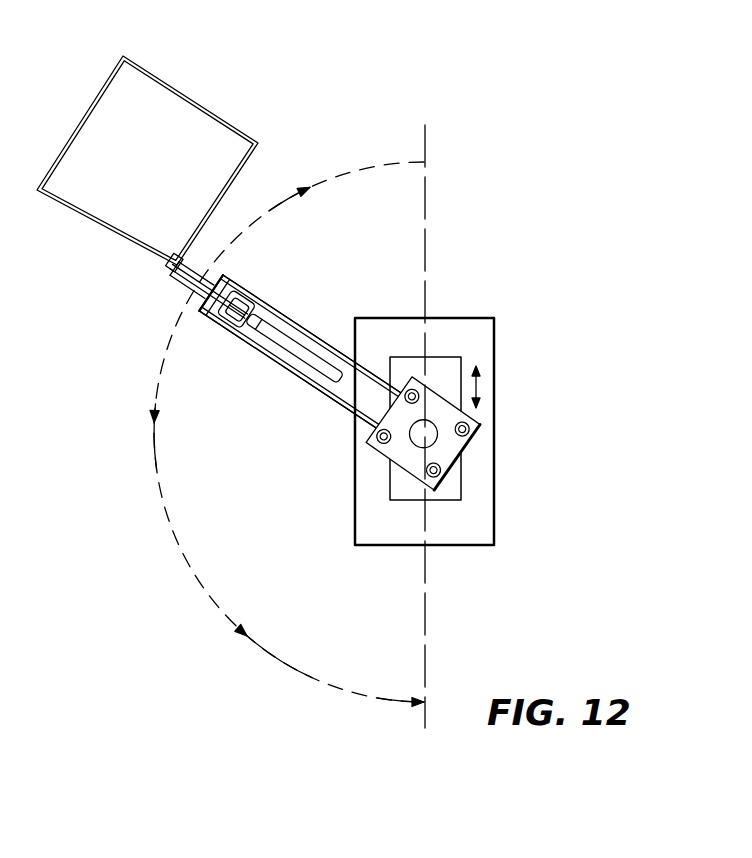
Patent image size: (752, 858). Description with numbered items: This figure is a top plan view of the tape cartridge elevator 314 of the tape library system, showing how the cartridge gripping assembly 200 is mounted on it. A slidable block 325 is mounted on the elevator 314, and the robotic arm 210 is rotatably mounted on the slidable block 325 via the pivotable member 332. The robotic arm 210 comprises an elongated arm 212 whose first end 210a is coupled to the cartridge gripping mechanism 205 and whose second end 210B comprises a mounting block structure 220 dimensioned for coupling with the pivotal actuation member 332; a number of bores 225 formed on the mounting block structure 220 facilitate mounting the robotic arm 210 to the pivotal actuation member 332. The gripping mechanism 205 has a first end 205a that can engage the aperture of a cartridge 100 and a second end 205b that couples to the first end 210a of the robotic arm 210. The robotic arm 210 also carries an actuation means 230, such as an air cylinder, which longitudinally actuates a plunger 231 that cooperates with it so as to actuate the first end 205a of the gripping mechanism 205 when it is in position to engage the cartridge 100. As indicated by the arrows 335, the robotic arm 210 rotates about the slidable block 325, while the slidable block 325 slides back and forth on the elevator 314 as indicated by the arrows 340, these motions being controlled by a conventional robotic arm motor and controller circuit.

The cartridge 100 is at (143, 62).
The cartridge gripping assembly 200 is at (244, 458).
The cartridge gripping mechanism 205 is at (187, 283).
The first end of gripping mechanism 205a is at (171, 257).
The second end of gripping mechanism 205b is at (222, 272).
The robotic arm 210 is at (310, 333).
The first end of robotic arm 210a is at (217, 328).
The second end of robotic arm 210B is at (407, 460).
The elongated arm 212 is at (325, 397).
The mounting block structure 220 is at (390, 480).
The bores 225 is at (420, 385).
The actuation means 230 is at (287, 347).
The plunger 231 is at (253, 293).
The tape cartridge elevator 314 is at (477, 530).
The slidable block 325 is at (415, 495).
The pivotable member 332 is at (440, 440).
The arrows indicating rotation 335 is at (324, 181).
The arrows indicating sliding 340 is at (487, 380).